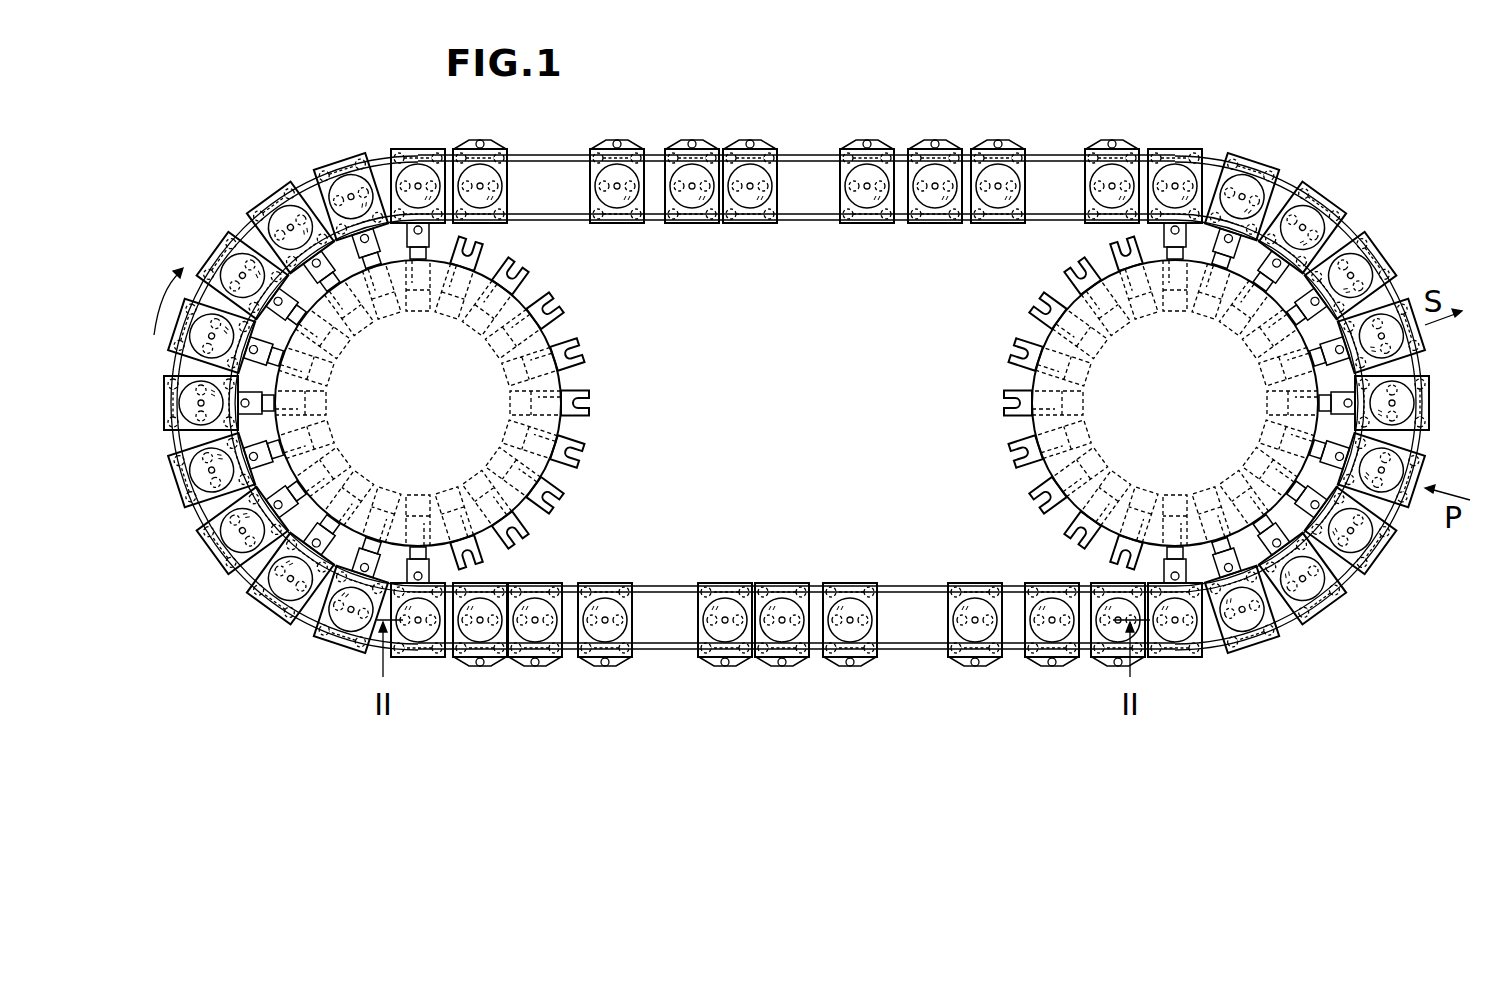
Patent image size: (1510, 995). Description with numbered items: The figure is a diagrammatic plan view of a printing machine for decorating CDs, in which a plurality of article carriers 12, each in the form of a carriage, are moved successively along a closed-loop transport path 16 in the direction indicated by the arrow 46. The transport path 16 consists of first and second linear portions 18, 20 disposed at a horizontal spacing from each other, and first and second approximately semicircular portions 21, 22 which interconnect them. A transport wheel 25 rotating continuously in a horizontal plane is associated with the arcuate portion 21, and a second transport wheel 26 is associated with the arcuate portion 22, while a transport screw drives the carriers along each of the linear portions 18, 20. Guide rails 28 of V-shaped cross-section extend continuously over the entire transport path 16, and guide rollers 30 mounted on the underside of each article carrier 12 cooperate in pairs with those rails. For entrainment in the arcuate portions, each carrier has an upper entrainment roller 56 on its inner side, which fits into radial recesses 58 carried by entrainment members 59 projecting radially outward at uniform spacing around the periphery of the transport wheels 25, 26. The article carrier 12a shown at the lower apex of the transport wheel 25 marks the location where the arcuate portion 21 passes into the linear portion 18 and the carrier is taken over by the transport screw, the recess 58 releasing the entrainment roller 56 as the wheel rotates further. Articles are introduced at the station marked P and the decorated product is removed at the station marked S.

The article carrier 12 is at (880, 149).
The article carrier 12a is at (1186, 633).
The transport path 16 is at (667, 650).
The first linear portion 18 is at (815, 603).
The second linear portion 20 is at (807, 172).
The first arcuate portion 21 is at (1336, 255).
The second arcuate portion 22 is at (341, 193).
The transport wheel 25 is at (1140, 403).
The transport wheel 26 is at (546, 403).
The guide rail 28 is at (1416, 440).
The guide roller 30 is at (872, 588).
The arrow 46 is at (168, 280).
The entrainment roller 56 is at (723, 576).
The radial recess 58 is at (1035, 403).
The entrainment member 59 is at (992, 424).